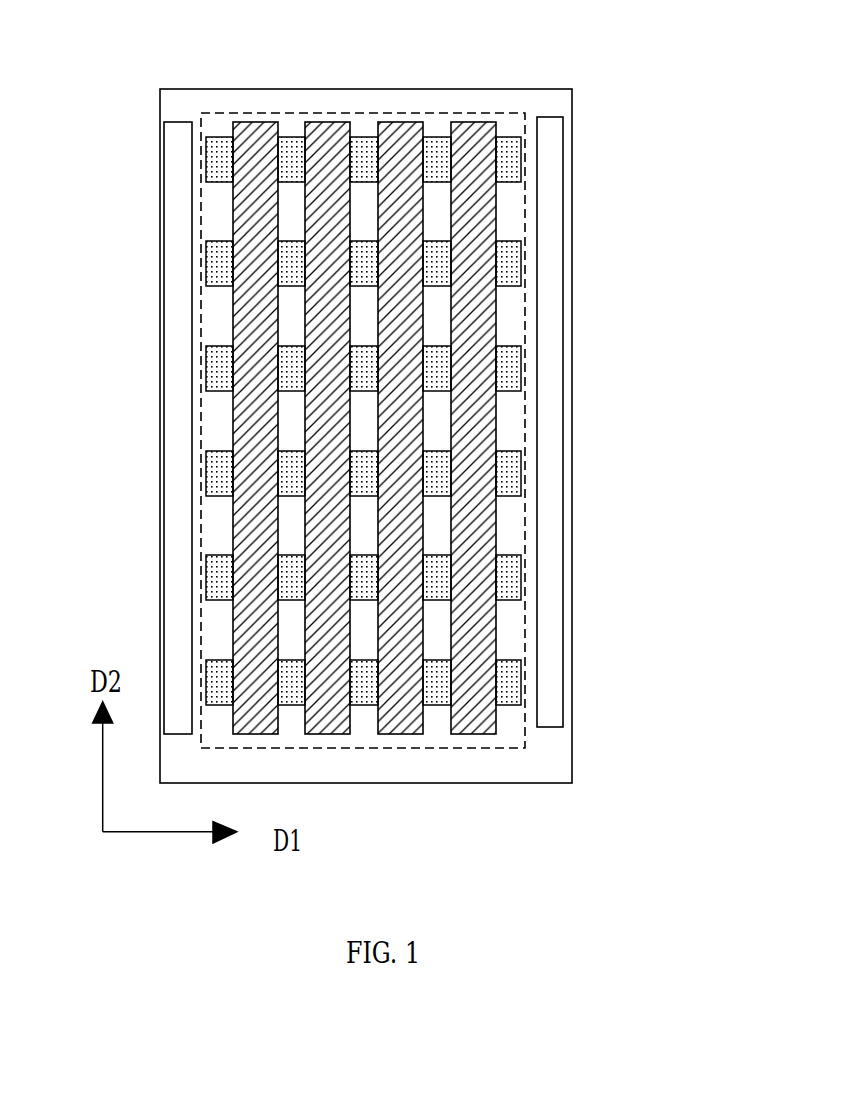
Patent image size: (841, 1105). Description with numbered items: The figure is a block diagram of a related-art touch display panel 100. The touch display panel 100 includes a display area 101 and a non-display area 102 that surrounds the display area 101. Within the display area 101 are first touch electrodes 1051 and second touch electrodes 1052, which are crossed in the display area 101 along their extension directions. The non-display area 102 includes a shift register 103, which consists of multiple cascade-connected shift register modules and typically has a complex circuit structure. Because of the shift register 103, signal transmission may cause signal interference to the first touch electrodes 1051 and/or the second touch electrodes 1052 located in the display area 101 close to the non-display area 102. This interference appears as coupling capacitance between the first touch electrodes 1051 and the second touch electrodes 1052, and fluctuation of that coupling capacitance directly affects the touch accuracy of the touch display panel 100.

The touch display panel 100 is at (107, 66).
The display area 101 is at (507, 126).
The non-display area 102 is at (542, 757).
The shift register 103 is at (180, 428).
The first touch electrodes 1051 is at (250, 213).
The second touch electrodes 1052 is at (507, 268).